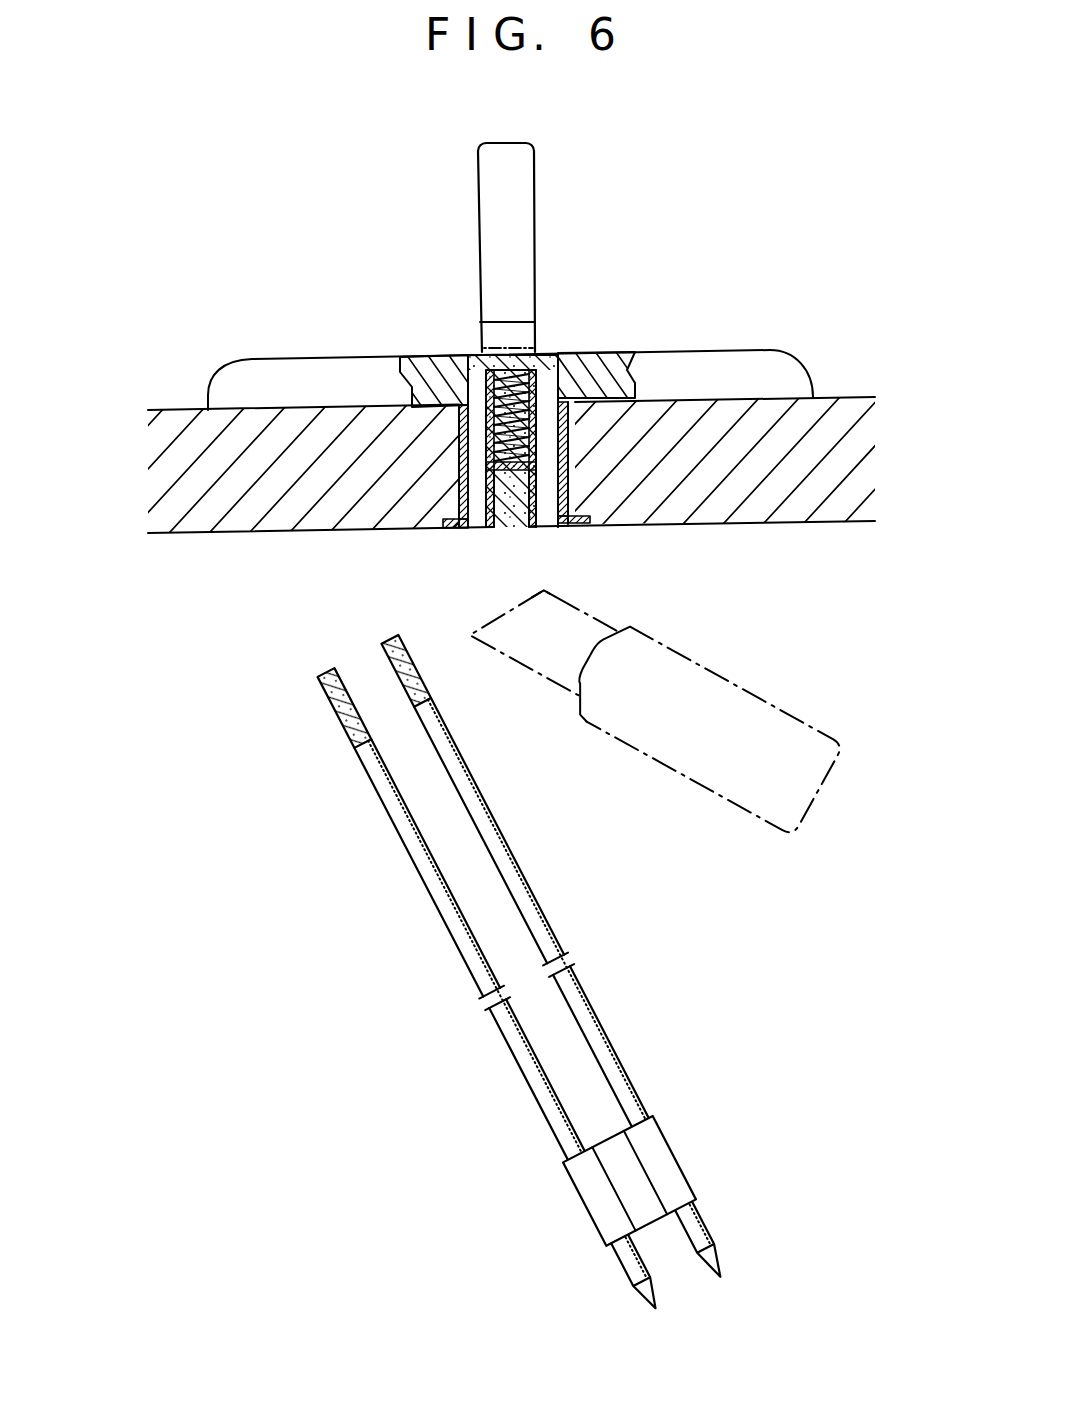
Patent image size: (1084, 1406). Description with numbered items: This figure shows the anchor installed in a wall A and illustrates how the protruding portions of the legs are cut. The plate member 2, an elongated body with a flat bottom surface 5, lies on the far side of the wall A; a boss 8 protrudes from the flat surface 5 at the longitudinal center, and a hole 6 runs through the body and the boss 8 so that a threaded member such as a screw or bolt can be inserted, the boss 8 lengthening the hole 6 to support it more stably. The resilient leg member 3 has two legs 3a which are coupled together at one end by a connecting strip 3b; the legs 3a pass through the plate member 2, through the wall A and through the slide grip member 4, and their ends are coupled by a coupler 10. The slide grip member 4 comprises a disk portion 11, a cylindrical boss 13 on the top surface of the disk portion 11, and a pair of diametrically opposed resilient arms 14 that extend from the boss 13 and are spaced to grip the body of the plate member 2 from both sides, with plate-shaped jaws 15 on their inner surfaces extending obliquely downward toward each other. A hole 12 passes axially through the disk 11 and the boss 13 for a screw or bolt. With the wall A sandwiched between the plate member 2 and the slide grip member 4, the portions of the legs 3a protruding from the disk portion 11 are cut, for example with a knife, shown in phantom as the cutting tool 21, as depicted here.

The plate member 2 is at (704, 363).
The resilient leg member 3 is at (523, 974).
The legs 3a is at (497, 873).
The connecting strip 3b is at (544, 355).
The slide grip member 4 is at (445, 539).
The flat bottom surface 5 is at (258, 410).
The hole 6 is at (477, 354).
The boss 8 is at (458, 450).
The coupler 10 is at (632, 1192).
The disk portion 11 is at (577, 524).
The hole 12 is at (512, 517).
The cylindrical boss 13 is at (458, 493).
The resilient arms 14 is at (518, 193).
The jaws 15 is at (508, 329).
The connector plug 21 is at (533, 648).
The wall A is at (798, 506).